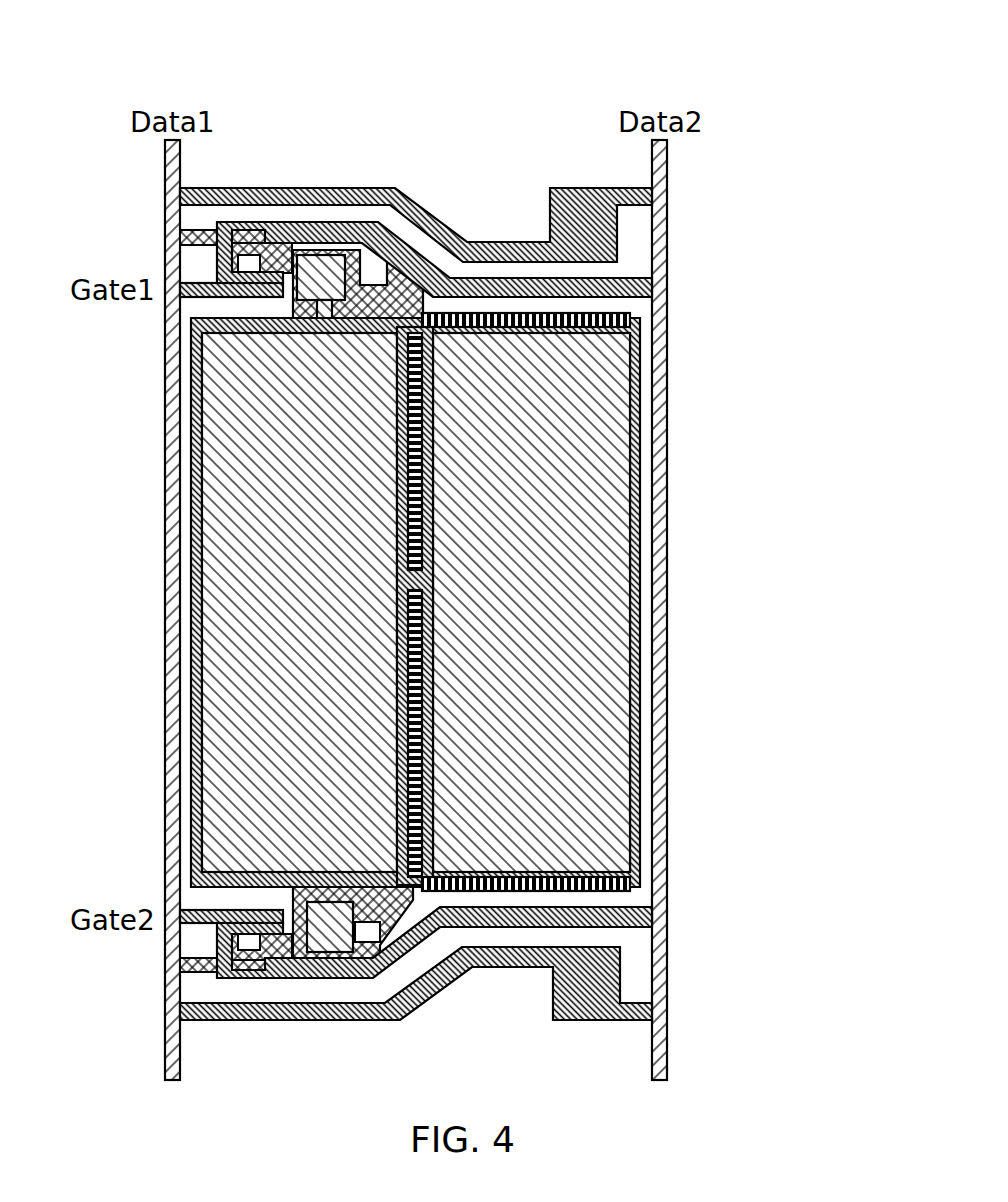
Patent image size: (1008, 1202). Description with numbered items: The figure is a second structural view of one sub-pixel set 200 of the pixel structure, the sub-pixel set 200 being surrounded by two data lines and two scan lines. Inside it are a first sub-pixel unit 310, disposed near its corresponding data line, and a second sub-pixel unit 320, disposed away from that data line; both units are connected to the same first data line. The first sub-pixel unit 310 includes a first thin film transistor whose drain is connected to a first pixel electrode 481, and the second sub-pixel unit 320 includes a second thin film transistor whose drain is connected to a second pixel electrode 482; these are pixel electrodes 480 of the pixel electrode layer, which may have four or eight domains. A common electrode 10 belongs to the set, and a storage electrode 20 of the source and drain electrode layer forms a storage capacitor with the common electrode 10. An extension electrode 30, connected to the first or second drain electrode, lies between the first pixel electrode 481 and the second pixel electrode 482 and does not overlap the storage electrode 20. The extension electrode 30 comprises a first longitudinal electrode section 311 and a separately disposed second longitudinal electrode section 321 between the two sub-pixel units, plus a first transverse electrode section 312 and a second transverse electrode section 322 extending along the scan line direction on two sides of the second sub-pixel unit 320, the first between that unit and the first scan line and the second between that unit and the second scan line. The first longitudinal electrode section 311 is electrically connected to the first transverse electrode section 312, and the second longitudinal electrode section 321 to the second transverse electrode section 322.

The sub-pixel set 200 is at (222, 62).
The common electrode 10 is at (197, 412).
The storage electrode 20 is at (399, 298).
The extension electrode 30 is at (636, 602).
The first sub-pixel unit 310 is at (410, 611).
The first longitudinal electrode section 311 is at (432, 527).
The first transverse electrode section 312 is at (642, 362).
The second sub-pixel unit 320 is at (605, 706).
The second longitudinal electrode section 321 is at (432, 620).
The second transverse electrode section 322 is at (599, 815).
The pixel electrode 480 is at (457, 706).
The first pixel electrode 481 is at (225, 740).
The second pixel electrode 482 is at (610, 706).